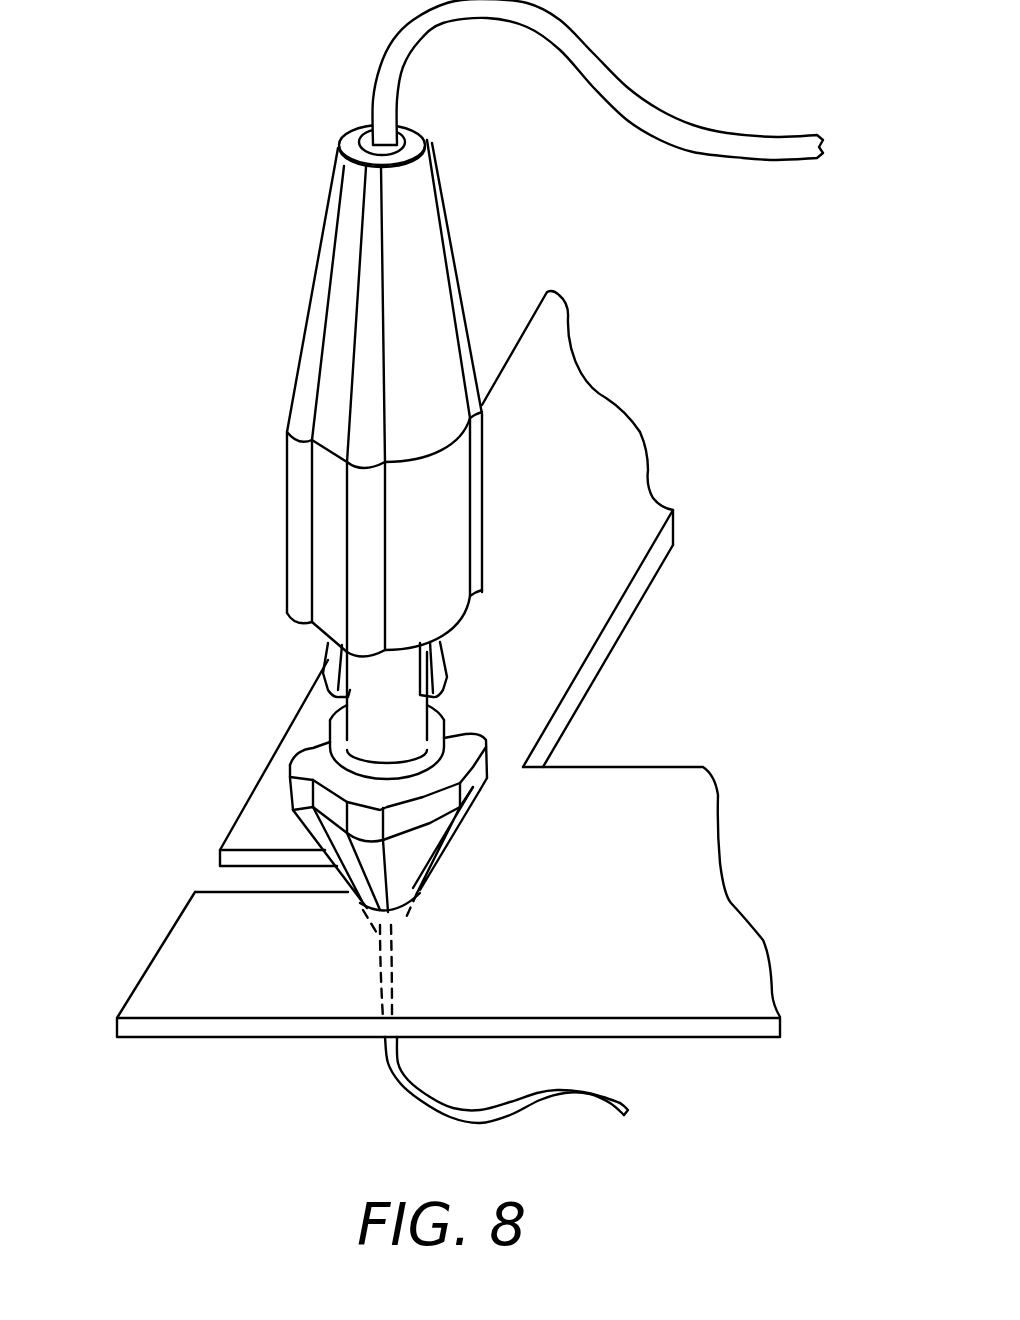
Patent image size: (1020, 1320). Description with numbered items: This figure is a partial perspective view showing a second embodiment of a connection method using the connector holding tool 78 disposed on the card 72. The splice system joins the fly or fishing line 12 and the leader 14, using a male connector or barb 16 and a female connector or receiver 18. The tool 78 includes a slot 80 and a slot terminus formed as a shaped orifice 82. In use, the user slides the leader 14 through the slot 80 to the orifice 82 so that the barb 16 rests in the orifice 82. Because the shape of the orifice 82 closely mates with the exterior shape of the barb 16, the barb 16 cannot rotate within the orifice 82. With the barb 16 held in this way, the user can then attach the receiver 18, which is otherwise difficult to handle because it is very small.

The fly or fishing line 12 is at (640, 88).
The leader 14 is at (403, 1097).
The male connector or barb 16 is at (448, 840).
The female connector or receiver 18 is at (312, 348).
The card 72 is at (600, 437).
The tool 78 is at (265, 855).
The slot 80 is at (233, 892).
The shaped orifice 82 is at (400, 918).